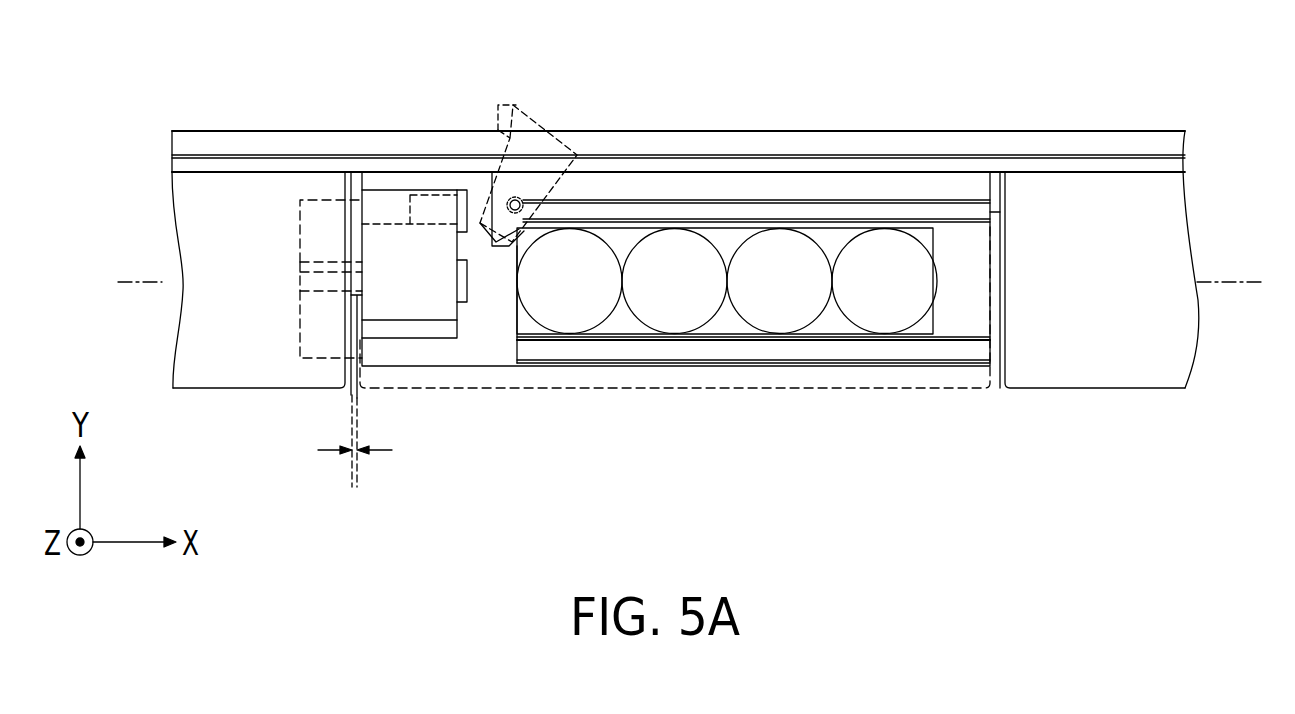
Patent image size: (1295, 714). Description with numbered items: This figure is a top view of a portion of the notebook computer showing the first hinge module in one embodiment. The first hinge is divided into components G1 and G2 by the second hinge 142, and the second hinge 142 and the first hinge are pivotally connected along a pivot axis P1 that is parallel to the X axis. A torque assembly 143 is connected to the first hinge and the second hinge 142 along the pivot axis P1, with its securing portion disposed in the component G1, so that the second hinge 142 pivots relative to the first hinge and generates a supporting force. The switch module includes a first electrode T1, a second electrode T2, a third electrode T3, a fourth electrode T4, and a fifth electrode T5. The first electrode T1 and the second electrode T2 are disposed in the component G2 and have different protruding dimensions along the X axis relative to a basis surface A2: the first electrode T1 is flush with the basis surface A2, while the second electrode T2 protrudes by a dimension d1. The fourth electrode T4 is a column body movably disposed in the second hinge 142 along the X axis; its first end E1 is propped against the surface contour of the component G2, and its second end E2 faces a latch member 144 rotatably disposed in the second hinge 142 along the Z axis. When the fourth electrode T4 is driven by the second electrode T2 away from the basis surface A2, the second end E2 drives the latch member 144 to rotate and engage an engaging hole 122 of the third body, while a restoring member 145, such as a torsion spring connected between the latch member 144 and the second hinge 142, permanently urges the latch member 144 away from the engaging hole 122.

The engaging hole 122 is at (511, 125).
The second hinge 142 is at (727, 388).
The torque assembly 143 is at (881, 318).
The latch member 144 is at (577, 170).
The restoring member 145 is at (527, 212).
The first end E1 is at (350, 213).
The second end E2 is at (474, 212).
The first electrode T1 is at (302, 227).
The second electrode T2 is at (302, 327).
The third electrode T3 is at (467, 283).
The fourth electrode T4 is at (387, 213).
The fifth electrode T5 is at (302, 272).
The component G1 of the first hinge G1 is at (1090, 375).
The component G2 of the first hinge G2 is at (247, 377).
The protruding dimension d1 is at (368, 451).
The basis surface A2 is at (350, 477).
The pivot axis P1 is at (705, 284).